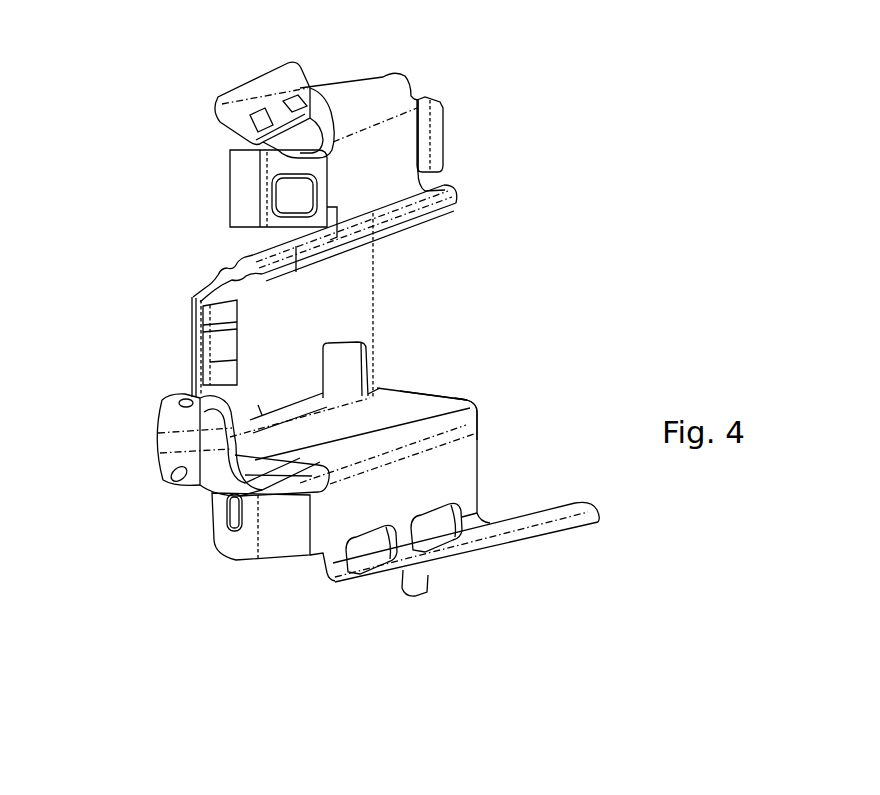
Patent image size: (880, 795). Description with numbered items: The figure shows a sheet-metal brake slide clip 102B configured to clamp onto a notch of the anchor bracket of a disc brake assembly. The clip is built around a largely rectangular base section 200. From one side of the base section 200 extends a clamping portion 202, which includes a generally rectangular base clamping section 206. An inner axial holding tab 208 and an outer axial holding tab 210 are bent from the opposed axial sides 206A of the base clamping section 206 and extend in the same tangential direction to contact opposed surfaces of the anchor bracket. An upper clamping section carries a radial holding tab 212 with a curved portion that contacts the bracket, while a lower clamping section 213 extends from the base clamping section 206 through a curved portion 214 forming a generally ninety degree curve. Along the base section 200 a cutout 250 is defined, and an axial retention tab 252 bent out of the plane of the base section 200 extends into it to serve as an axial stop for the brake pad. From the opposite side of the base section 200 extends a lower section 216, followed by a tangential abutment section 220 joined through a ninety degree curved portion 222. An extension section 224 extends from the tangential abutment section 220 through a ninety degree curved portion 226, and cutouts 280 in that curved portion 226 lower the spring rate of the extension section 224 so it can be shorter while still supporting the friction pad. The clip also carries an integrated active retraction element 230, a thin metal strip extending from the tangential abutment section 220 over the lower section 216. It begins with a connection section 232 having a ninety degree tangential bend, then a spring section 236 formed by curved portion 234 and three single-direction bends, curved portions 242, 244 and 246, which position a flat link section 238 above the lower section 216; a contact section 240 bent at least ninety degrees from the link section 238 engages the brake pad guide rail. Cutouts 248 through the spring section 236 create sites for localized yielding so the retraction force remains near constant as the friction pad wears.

The brake slide clip 102B is at (712, 51).
The clamping portion 202 is at (157, 101).
The radial holding tab 212 is at (282, 110).
The base clamping section 206 is at (399, 135).
The axial sides 206A is at (441, 137).
The inner axial holding tab 208 is at (432, 95).
The outer axial holding tab 210 is at (245, 193).
The curved portion 214 is at (423, 193).
The lower clamping section 213 is at (252, 258).
The base section 200 is at (343, 293).
The cutout 250 is at (193, 300).
The axial retention tab 252 is at (238, 332).
The contact section 240 is at (363, 345).
The link section 238 is at (343, 432).
The curved portion 246 is at (260, 403).
The active retraction element 230 is at (146, 354).
The curved portion 244 is at (160, 400).
The spring section 236 is at (131, 462).
The cutouts 248 is at (183, 402).
The curved portion 234 is at (310, 472).
The connection section 232 is at (280, 537).
The curved portion 242 is at (215, 493).
The tangential abutment section 220 is at (455, 457).
The curved portion 222 is at (477, 410).
The lower section 216 is at (430, 393).
The curved portion 226 is at (343, 585).
The cutouts 280 is at (450, 530).
The extension section 224 is at (577, 523).